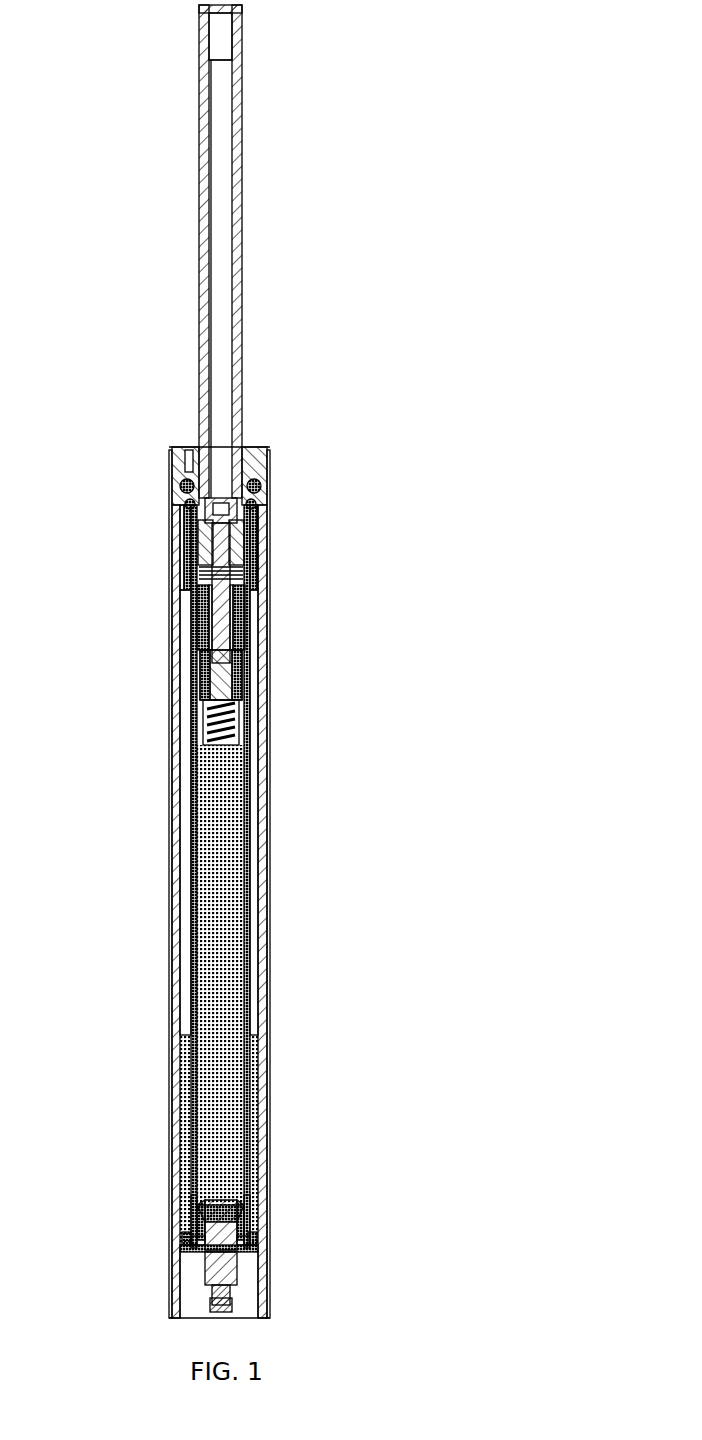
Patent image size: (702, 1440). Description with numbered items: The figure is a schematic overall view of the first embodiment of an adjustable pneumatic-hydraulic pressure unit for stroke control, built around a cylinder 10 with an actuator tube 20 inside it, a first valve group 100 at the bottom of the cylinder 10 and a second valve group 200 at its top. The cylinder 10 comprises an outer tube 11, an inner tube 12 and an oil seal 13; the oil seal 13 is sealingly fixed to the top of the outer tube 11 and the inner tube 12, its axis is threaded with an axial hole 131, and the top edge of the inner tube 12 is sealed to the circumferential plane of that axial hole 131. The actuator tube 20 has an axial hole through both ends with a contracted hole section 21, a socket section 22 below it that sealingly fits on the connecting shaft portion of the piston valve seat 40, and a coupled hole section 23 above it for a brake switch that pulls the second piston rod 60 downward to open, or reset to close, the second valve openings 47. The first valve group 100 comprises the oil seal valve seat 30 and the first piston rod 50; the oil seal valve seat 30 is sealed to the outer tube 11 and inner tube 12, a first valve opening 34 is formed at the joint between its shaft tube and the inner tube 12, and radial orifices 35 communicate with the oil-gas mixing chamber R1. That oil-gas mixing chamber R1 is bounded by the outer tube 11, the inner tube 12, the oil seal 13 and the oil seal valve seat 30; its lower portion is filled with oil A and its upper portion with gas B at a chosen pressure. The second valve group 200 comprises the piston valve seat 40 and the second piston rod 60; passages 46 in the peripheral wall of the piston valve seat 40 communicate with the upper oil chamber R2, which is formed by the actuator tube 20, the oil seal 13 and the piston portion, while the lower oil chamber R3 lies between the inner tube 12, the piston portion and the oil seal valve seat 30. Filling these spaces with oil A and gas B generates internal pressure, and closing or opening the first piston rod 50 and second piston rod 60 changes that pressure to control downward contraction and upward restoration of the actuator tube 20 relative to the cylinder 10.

The cylinder 10 is at (281, 456).
The outer tube 11 is at (172, 528).
The inner tube 12 is at (172, 567).
The oil seal 13 is at (186, 450).
The axial hole 131 is at (184, 491).
The actuator tube 20 is at (256, 197).
The contracted hole section 21 is at (262, 489).
The socket section 22 is at (247, 521).
The coupled hole section 23 is at (244, 330).
The oil seal valve seat 30 is at (189, 1255).
The first valve opening 34 is at (204, 1198).
The orifices 35 is at (262, 1239).
The piston valve seat 40 is at (261, 645).
The passages 46 is at (241, 563).
The second valve openings 47 is at (244, 676).
The first piston rod 50 is at (240, 1204).
The second piston rod 60 is at (206, 680).
The first valve group 100 is at (270, 1310).
The second valve group 200 is at (188, 619).
The oil A is at (204, 995).
The gas B is at (180, 858).
The oil-gas mixing chamber R1 is at (259, 895).
The upper oil chamber R2 is at (261, 586).
The lower oil chamber R3 is at (235, 1084).